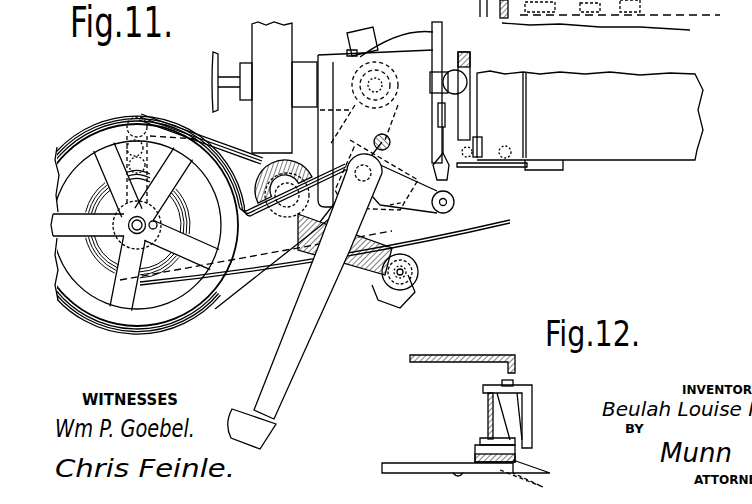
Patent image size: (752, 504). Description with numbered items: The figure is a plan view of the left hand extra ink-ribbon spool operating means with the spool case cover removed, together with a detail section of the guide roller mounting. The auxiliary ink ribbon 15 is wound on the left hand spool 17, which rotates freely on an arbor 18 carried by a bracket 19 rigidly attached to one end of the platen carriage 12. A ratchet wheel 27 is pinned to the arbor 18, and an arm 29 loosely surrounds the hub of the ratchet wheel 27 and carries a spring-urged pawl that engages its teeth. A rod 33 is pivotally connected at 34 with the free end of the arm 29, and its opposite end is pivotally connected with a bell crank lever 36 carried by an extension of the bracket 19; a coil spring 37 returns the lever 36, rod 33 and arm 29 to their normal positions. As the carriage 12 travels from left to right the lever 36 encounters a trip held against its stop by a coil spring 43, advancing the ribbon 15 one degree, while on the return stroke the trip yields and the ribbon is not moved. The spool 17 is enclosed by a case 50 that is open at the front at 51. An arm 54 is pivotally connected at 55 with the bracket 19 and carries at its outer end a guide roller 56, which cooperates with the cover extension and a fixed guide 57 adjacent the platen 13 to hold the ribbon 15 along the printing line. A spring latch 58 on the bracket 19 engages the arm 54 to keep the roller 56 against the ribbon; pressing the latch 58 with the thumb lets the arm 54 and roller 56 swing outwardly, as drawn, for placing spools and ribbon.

In FIG. 11, the platen carriage 12 is at (433, 62).
In FIG. 12, the platen carriage 12 is at (437, 355).
In FIG. 11, the platen 13 is at (652, 83).
In FIG. 11, the auxiliary ink ribbon 15 is at (500, 226).
In FIG. 12, the auxiliary ink ribbon 15 is at (487, 409).
In FIG. 11, the left hand spool 17 is at (88, 133).
In FIG. 11, the arbor 18 is at (128, 233).
In FIG. 11, the bracket 19 is at (308, 165).
In FIG. 12, the bracket 19 is at (393, 463).
In FIG. 11, the ratchet wheel 27 is at (149, 230).
In FIG. 11, the arm 29 is at (128, 118).
In FIG. 11, the rod 33 is at (228, 144).
In FIG. 11, the pivotal connection 34 is at (141, 117).
In FIG. 11, the bell crank lever 36 is at (358, 28).
In FIG. 11, the coil spring 37 is at (347, 52).
In FIG. 11, the coil spring 43 is at (523, 24).
In FIG. 11, the spool case 50 is at (139, 336).
In FIG. 11, the front opening 51 is at (232, 285).
In FIG. 11, the arm 54 is at (358, 267).
In FIG. 12, the arm 54 is at (475, 451).
In FIG. 11, the pivotal connection 55 is at (279, 168).
In FIG. 11, the guide roller 56 is at (418, 273).
In FIG. 12, the guide roller 56 is at (505, 420).
In FIG. 11, the fixed guide 57 is at (548, 168).
In FIG. 11, the spring latch 58 is at (392, 223).
In FIG. 12, the spring latch 58 is at (548, 472).